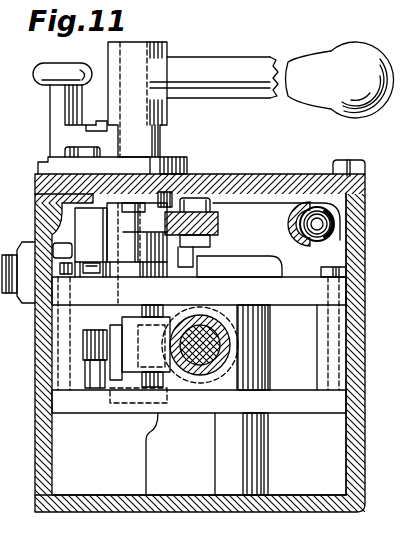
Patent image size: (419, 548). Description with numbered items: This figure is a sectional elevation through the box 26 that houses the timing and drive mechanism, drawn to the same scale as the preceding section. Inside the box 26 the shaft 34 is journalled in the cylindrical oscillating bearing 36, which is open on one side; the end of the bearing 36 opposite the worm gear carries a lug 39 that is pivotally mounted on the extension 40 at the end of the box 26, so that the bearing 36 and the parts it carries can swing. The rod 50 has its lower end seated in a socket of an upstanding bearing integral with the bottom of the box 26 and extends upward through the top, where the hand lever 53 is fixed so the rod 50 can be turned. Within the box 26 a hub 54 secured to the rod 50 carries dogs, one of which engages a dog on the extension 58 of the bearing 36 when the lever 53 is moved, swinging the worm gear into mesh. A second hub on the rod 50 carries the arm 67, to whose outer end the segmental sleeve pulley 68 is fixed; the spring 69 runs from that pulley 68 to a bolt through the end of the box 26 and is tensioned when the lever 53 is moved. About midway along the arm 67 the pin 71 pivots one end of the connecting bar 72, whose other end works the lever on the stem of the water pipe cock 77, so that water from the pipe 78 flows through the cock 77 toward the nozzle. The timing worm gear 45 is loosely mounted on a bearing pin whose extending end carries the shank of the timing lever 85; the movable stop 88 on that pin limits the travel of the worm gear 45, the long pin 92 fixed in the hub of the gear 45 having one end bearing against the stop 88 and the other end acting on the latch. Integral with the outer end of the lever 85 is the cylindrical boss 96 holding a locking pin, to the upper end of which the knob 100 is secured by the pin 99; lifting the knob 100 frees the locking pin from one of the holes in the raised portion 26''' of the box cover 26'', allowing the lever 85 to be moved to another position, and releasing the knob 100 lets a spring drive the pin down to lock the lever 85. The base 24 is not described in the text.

The base 24 is at (34, 466).
The box 26 is at (196, 343).
The box cover 26'' is at (321, 165).
The raised portion of the box cover 26''' is at (78, 159).
The shaft 34 is at (208, 368).
The cylindrical oscillating bearing 36 is at (209, 317).
The lug 39 is at (270, 344).
The extension 40 is at (268, 453).
The timing worm gear 45 is at (93, 340).
The rod 50 is at (160, 134).
The hand lever 53 is at (227, 62).
The hub 54 is at (113, 372).
The extension of bearing 58 is at (140, 354).
The arm 67 is at (218, 226).
The segmental sleeve pulley 68 is at (287, 224).
The spring 69 is at (318, 241).
The pin 71 is at (197, 194).
The connecting bar 72 is at (212, 203).
The water pipe cock 77 is at (171, 268).
The pipe 78 is at (259, 262).
The timing lever 85 is at (89, 129).
The movable stop 88 is at (75, 226).
The pin 92 is at (86, 273).
The cylindrical boss 96 is at (52, 98).
The pin 99 is at (63, 74).
The knob 100 is at (40, 64).